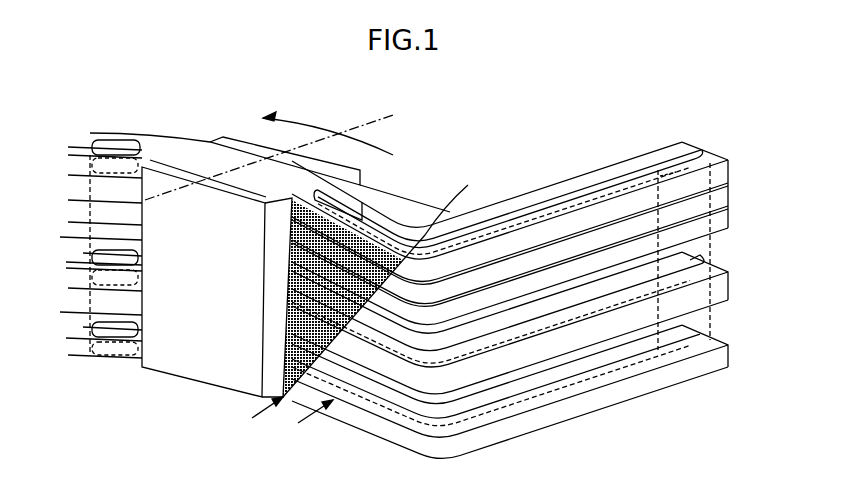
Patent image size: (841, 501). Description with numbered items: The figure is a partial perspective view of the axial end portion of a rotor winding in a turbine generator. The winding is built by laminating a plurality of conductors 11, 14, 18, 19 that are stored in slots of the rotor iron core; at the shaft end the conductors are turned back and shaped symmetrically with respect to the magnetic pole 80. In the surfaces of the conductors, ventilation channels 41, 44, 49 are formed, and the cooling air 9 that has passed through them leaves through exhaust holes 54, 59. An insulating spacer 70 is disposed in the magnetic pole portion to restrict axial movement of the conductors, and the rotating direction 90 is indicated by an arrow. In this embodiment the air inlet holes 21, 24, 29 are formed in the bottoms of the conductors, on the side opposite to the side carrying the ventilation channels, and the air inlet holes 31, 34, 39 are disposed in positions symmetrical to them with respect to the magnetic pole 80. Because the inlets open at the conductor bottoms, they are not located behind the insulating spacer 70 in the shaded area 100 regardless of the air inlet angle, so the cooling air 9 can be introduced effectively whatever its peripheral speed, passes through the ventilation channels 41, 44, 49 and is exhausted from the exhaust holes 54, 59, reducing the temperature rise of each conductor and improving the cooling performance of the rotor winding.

The cooling air 9 is at (265, 417).
The conductor 11 is at (728, 356).
The conductor 14 is at (728, 285).
The conductor 18 is at (728, 197).
The conductor 19 is at (728, 172).
The air inlet hole 21 is at (347, 380).
The air inlet hole 24 is at (382, 281).
The air inlet hole 29 is at (350, 197).
The air inlet hole 31 is at (113, 320).
The air inlet hole 34 is at (113, 252).
The air inlet hole 39 is at (121, 140).
The ventilation channel 41 is at (563, 383).
The ventilation channel 44 is at (613, 300).
The ventilation channel 49 is at (593, 187).
The exhaust hole 54 is at (683, 263).
The exhaust hole 59 is at (690, 153).
The insulating spacer 70 is at (195, 348).
The magnetic pole 80 is at (270, 153).
The rotating direction 90 is at (272, 116).
The shaded area 100 is at (300, 197).